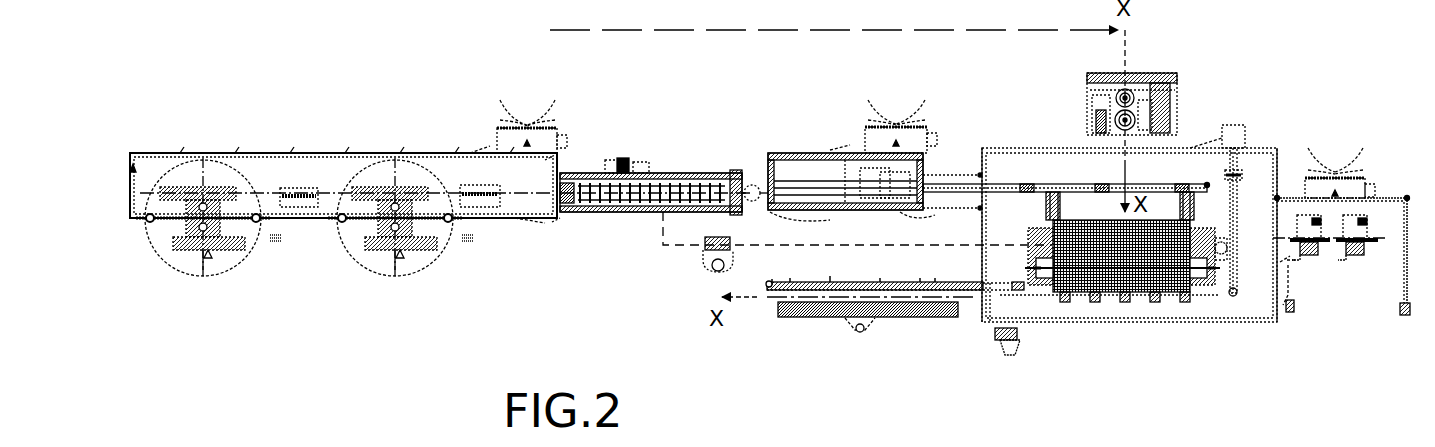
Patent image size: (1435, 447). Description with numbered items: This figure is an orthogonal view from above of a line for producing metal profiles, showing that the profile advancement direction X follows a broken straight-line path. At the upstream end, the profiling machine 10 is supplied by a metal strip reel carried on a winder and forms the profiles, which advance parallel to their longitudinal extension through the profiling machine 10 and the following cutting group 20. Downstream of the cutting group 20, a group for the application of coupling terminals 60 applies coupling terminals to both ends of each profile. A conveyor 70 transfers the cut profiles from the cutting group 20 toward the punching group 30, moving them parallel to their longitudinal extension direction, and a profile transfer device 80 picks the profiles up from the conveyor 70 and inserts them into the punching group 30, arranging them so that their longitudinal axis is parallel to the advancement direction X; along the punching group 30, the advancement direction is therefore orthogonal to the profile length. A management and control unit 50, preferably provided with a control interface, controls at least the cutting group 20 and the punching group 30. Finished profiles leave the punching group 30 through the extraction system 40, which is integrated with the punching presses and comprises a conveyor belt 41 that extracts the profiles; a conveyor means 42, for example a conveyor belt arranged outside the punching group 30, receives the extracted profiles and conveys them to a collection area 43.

The profiling machine 10 is at (603, 224).
The cutting group 20 is at (812, 145).
The punching group 30 is at (1198, 283).
The extraction system 40 is at (1030, 308).
The conveyor belt 41 is at (1200, 285).
The conveyor means 42 is at (992, 290).
The collection area 43 is at (772, 316).
The management and control unit 50 is at (706, 252).
The group for the application of coupling terminals 60 is at (1205, 228).
The conveyor 70 is at (1068, 184).
The profile transfer device 80 is at (1165, 183).